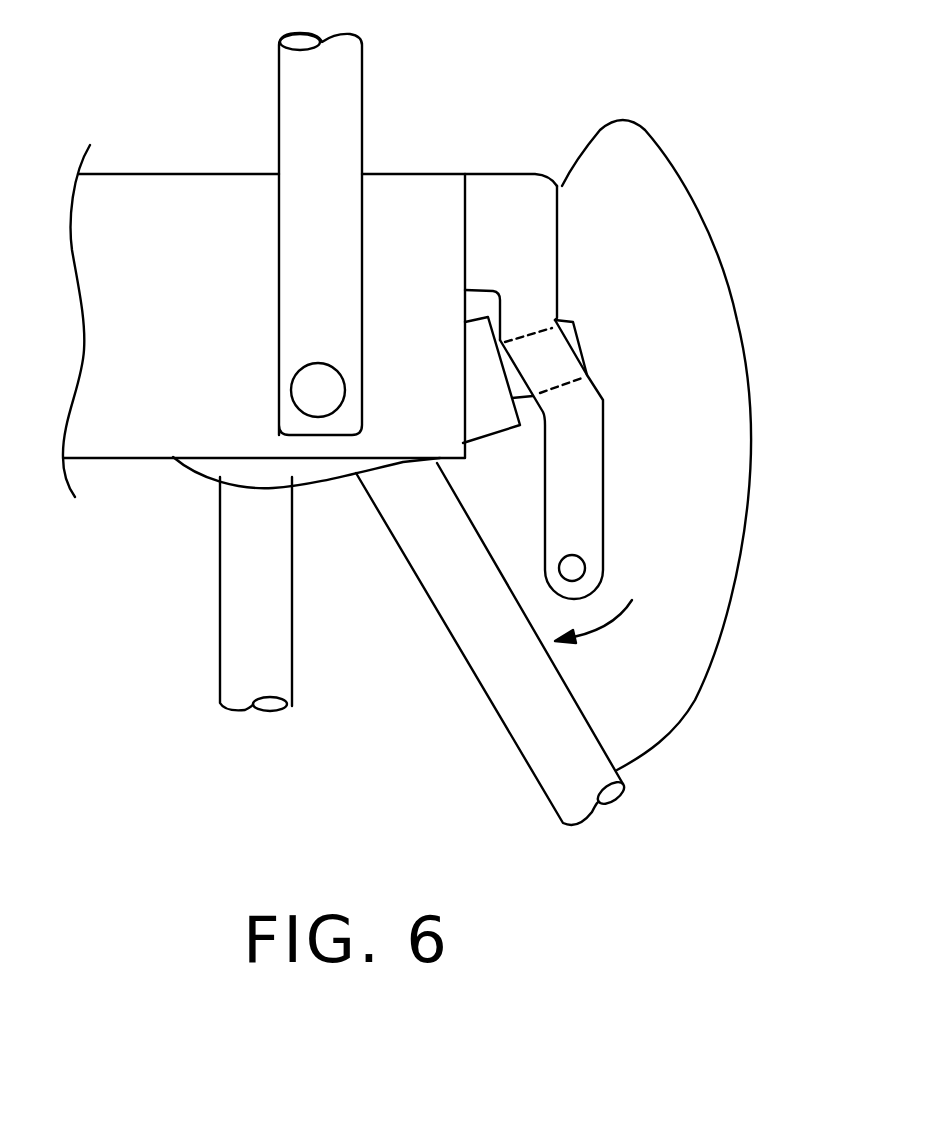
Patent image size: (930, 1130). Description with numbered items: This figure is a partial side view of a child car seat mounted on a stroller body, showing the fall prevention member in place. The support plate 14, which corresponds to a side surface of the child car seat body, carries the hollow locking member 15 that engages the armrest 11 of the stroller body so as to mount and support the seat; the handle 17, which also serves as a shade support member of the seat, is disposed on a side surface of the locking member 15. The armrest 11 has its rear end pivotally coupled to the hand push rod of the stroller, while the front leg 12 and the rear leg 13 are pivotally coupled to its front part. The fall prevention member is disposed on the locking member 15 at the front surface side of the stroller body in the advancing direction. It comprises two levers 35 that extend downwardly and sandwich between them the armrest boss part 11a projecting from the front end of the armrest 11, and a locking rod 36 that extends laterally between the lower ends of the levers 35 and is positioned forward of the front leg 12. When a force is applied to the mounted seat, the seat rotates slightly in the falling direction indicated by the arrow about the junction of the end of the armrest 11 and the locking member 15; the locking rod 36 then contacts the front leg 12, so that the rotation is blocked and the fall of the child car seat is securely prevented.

The armrest 11 is at (237, 470).
The armrest boss part 11a is at (583, 340).
The front leg 12 is at (562, 720).
The rear leg 13 is at (237, 610).
The support plate 14 is at (723, 322).
The locking member 15 is at (173, 173).
The handle 17 is at (323, 90).
The lever 35 is at (583, 472).
The locking rod 36 is at (576, 568).